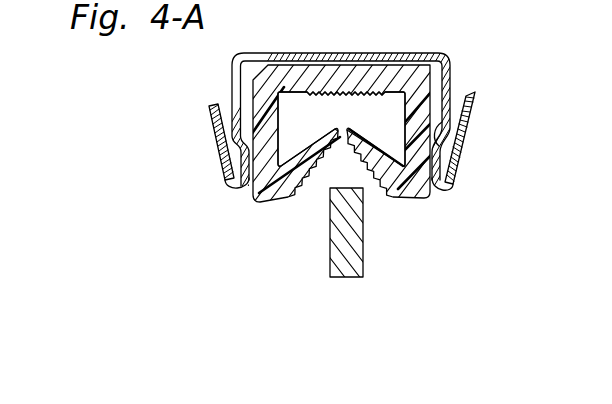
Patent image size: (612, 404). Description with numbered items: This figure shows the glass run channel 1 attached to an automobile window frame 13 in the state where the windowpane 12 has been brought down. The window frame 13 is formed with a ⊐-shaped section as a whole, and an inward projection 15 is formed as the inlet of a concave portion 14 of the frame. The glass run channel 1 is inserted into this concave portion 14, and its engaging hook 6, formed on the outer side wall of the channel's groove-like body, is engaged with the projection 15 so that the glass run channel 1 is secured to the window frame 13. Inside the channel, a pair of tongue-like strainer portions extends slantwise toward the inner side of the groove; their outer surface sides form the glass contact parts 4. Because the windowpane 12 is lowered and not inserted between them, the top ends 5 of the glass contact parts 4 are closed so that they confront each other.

The glass run channel 1 is at (438, 55).
The glass contact parts 4 is at (315, 201).
The top ends 5 is at (340, 126).
The hook 6 is at (443, 126).
The windowpane 12 is at (340, 245).
The window frame 13 is at (466, 158).
The concave portion 14 is at (230, 75).
The inward projection 15 is at (441, 188).